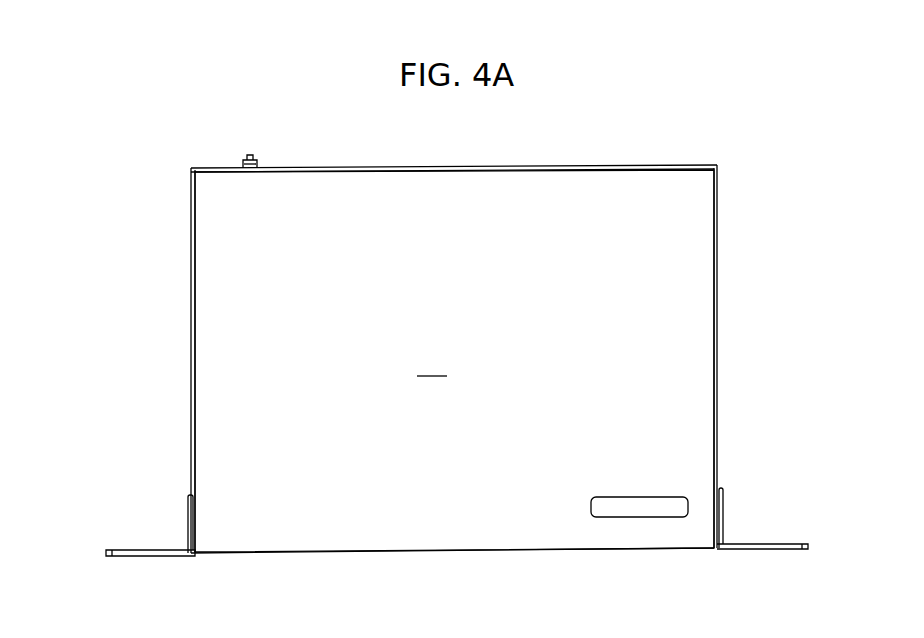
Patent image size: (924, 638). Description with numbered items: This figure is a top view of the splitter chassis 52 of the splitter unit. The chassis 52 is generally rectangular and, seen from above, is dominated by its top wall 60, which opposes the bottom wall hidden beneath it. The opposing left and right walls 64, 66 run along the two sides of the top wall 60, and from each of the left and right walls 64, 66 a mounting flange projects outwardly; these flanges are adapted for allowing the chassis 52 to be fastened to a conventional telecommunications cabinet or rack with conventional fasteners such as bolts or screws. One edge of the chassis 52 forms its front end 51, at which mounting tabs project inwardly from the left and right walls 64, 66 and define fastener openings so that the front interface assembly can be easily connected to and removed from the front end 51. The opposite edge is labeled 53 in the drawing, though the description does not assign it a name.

The front end 51 is at (573, 551).
The chassis 52 is at (478, 369).
The top edge of panel 53 is at (569, 165).
The top wall 60 is at (454, 361).
The left wall 64 is at (192, 350).
The right wall 66 is at (717, 303).